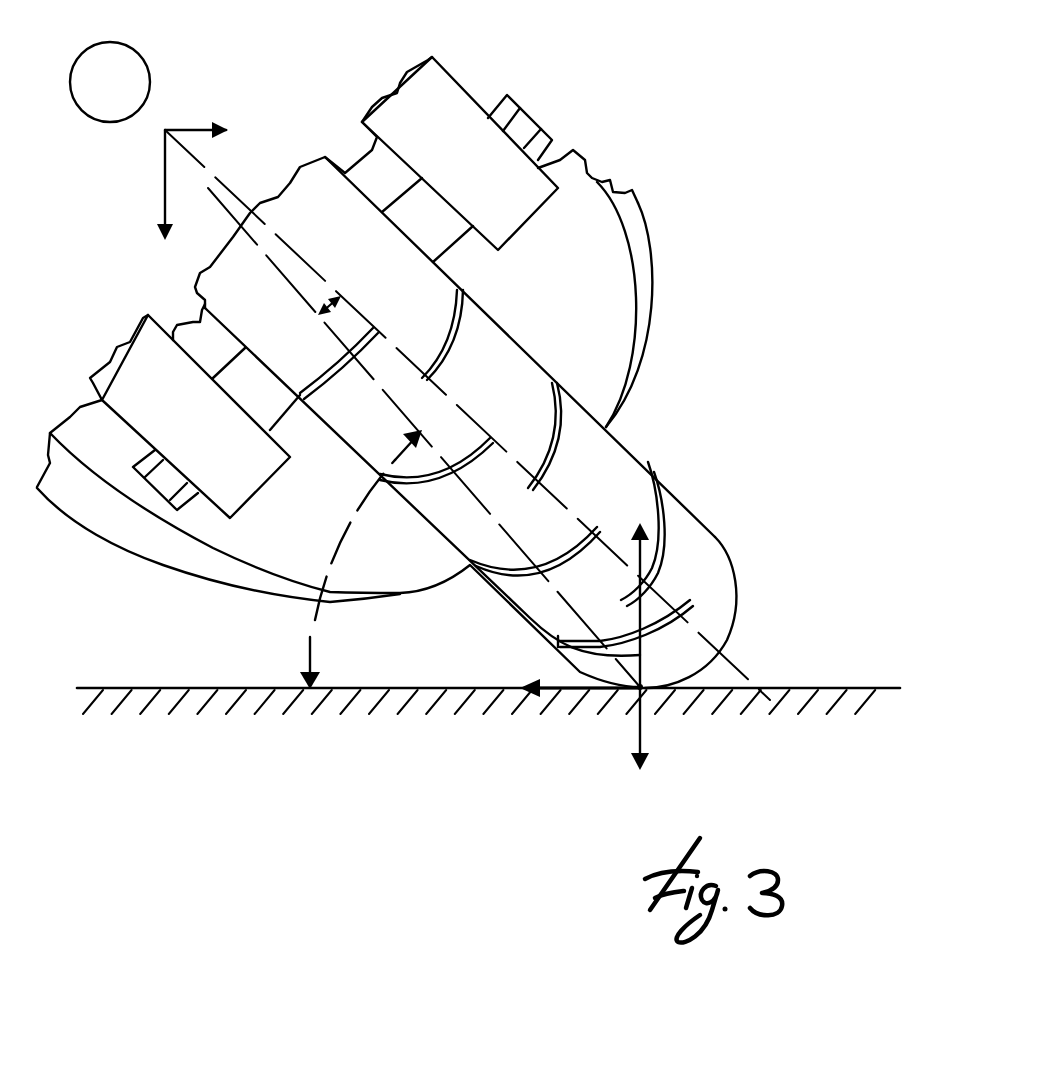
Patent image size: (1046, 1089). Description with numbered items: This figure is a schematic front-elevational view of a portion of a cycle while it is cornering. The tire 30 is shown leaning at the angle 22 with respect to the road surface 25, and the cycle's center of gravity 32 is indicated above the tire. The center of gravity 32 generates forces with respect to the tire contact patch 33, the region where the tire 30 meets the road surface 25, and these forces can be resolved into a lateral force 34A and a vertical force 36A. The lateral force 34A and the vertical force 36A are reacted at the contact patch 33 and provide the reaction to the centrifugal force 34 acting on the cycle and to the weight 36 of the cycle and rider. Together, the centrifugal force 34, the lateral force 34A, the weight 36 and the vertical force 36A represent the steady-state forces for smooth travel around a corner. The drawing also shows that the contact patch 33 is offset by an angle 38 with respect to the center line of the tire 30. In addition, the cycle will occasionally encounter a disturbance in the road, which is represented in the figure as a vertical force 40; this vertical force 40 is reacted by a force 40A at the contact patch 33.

The angle 22 is at (314, 610).
The road surface 25 is at (818, 688).
The tire 30 is at (648, 462).
The center of gravity 32 is at (132, 46).
The tire contact patch 33 is at (597, 690).
The centrifugal force 34 is at (190, 128).
The lateral force 34A is at (557, 690).
The weight 36 is at (165, 183).
The vertical force 36A is at (600, 643).
The angle 38 is at (330, 303).
The vertical force 40 is at (577, 665).
The force 40A is at (643, 738).